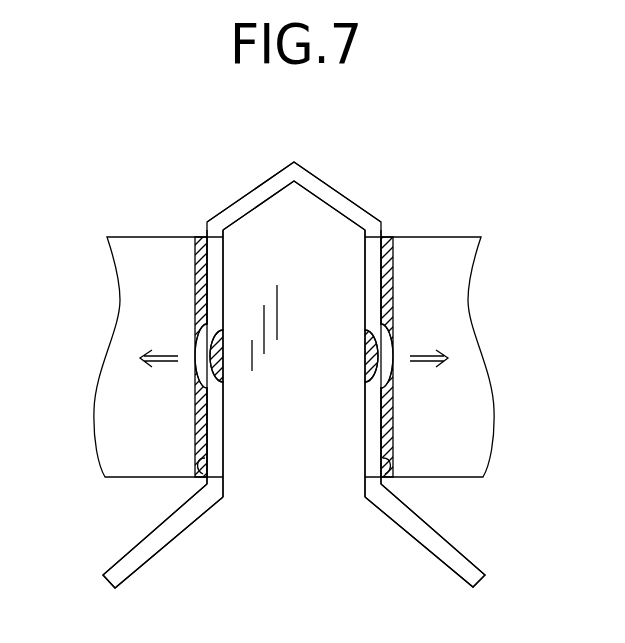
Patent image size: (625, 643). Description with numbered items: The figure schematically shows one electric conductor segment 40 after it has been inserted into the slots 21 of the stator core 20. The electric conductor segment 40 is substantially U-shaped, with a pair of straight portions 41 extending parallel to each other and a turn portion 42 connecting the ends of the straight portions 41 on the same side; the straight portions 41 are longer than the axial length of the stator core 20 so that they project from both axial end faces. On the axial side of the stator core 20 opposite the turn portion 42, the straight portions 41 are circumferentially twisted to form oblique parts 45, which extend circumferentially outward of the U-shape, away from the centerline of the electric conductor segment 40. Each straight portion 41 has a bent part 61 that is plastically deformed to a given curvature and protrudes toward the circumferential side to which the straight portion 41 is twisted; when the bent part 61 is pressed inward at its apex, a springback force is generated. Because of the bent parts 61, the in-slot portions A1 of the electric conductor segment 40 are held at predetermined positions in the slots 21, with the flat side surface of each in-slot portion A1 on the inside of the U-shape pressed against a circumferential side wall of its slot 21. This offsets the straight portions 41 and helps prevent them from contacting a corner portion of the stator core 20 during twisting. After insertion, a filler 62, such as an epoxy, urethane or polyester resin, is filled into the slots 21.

The stator core 20 is at (460, 249).
The slot 21 is at (193, 471).
The electric conductor segment 40 is at (294, 364).
The straight portion 41 is at (365, 281).
The turn portion 42 is at (333, 186).
The oblique part 45 is at (150, 563).
The bent part 61 is at (203, 325).
The filler 62 is at (200, 249).
The in-slot portion A1 is at (203, 412).